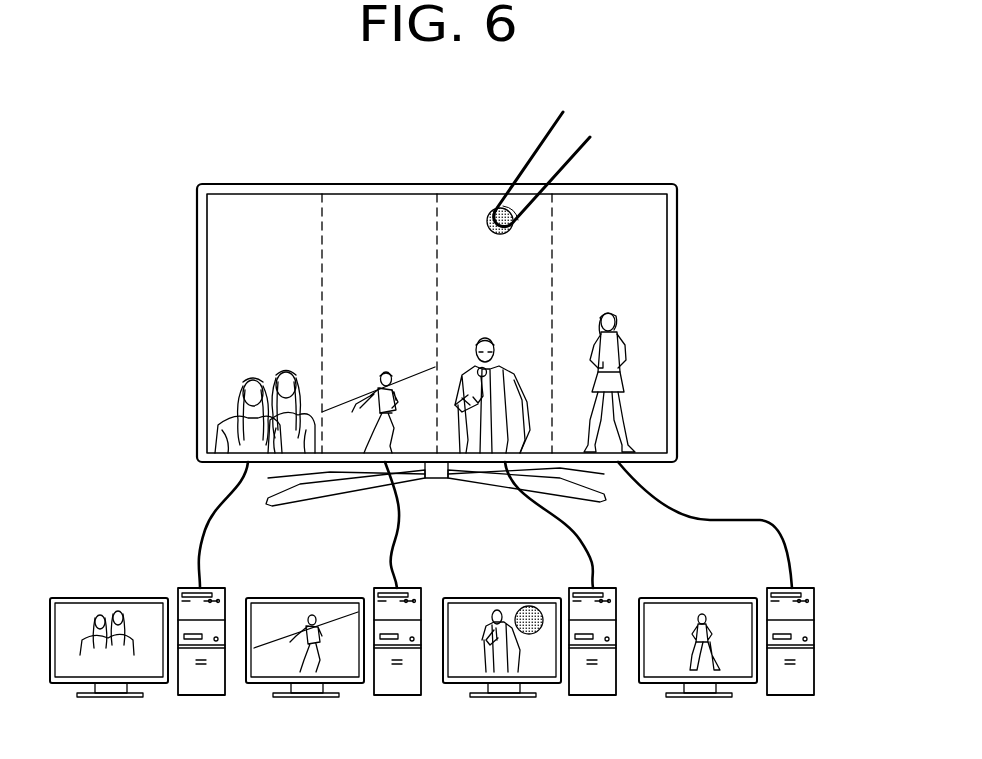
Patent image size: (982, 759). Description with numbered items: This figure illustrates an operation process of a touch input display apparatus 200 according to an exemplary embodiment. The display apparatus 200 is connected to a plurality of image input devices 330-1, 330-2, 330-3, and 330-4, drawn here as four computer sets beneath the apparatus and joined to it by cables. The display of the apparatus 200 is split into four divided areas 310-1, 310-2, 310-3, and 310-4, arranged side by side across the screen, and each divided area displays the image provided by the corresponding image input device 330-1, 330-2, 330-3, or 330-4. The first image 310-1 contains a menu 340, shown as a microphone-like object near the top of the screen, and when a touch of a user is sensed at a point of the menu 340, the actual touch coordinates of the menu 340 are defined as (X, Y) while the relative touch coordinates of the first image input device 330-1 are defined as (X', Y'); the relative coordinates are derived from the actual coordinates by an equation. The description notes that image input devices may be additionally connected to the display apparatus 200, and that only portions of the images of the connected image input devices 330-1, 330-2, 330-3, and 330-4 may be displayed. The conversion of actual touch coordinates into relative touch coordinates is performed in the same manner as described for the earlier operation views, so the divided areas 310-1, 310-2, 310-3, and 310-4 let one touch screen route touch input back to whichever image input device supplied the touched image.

The display apparatus 200 is at (660, 184).
The first image 310-1 is at (240, 202).
The divided area 310-2 is at (376, 202).
The divided area 310-3 is at (464, 202).
The divided area 310-4 is at (613, 202).
The menu 340 is at (493, 210).
The first image input device 330-1 is at (70, 598).
The image input device 330-2 is at (266, 598).
The image input device 330-3 is at (463, 598).
The image input device 330-4 is at (659, 598).